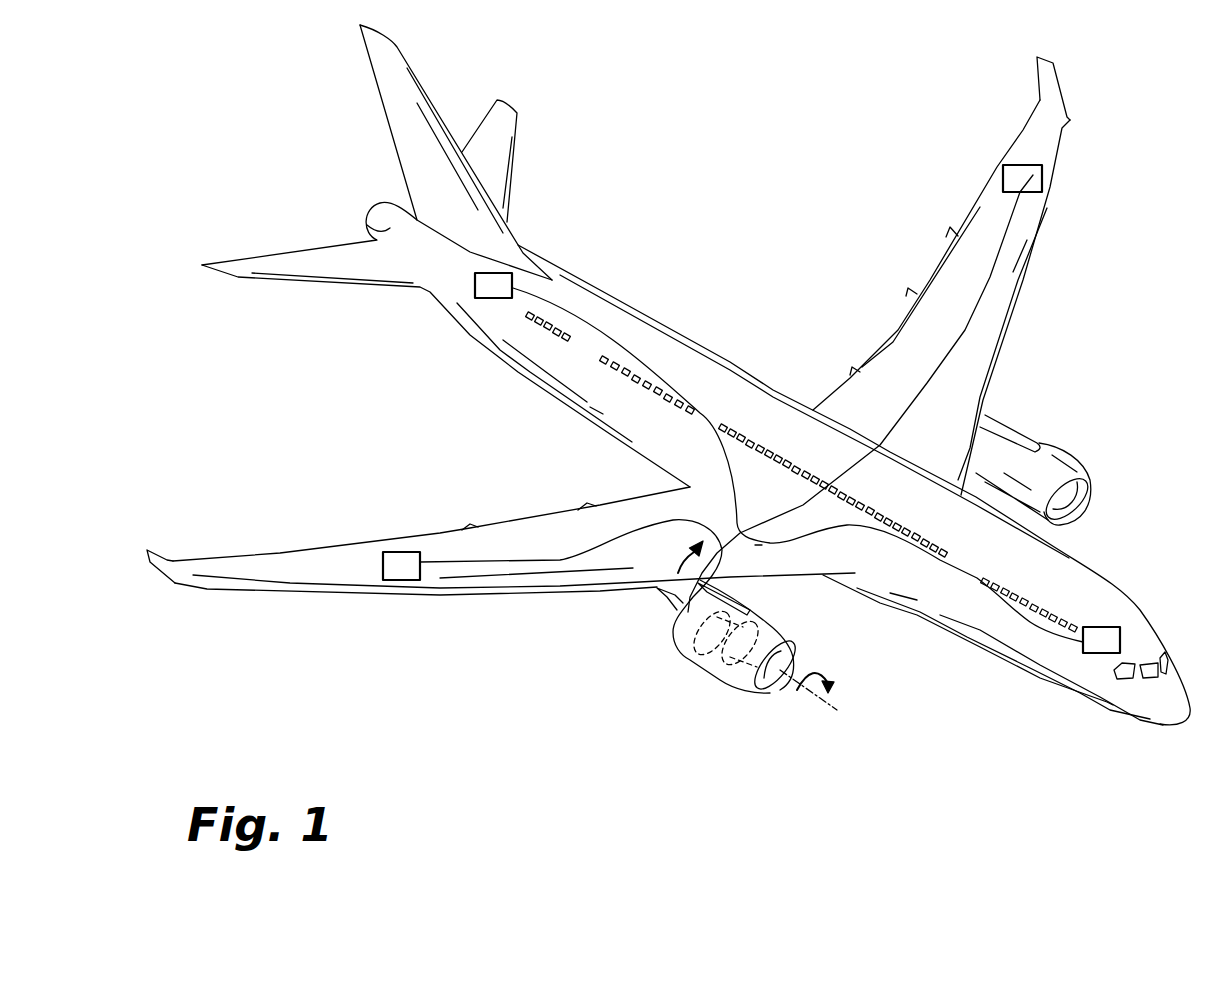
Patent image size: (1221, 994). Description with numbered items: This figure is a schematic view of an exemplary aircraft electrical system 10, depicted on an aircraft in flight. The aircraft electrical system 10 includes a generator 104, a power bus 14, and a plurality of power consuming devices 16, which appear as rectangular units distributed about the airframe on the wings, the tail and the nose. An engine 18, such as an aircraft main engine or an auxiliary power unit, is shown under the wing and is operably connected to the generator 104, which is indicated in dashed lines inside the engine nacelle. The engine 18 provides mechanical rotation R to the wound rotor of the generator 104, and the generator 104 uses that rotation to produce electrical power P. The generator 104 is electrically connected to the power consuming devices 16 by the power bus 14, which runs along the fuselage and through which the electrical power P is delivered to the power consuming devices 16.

The aircraft electrical system 10 is at (260, 715).
The power bus 14 is at (700, 413).
The power consuming devices 16 is at (494, 284).
The engine 18 is at (728, 677).
The generator 104 is at (703, 645).